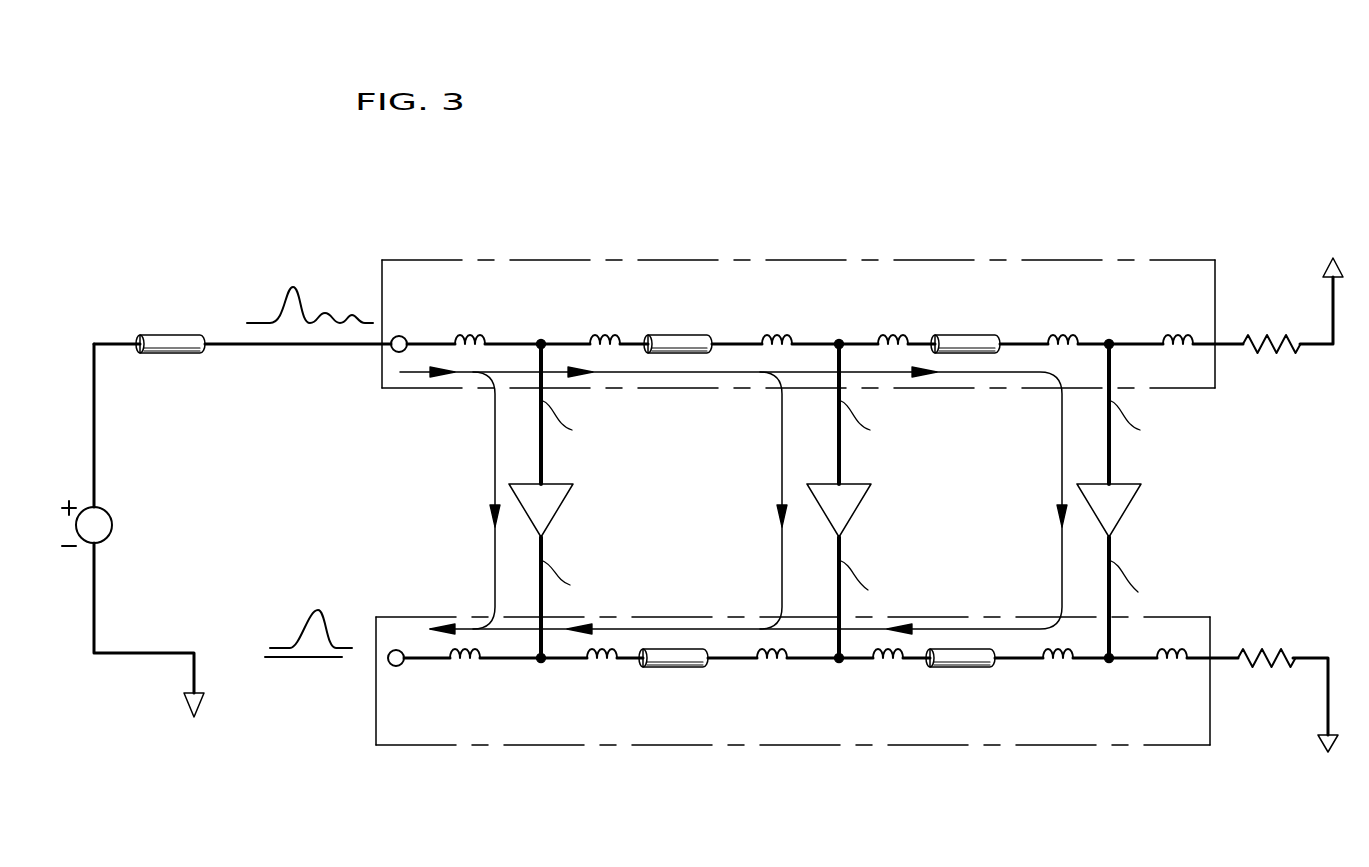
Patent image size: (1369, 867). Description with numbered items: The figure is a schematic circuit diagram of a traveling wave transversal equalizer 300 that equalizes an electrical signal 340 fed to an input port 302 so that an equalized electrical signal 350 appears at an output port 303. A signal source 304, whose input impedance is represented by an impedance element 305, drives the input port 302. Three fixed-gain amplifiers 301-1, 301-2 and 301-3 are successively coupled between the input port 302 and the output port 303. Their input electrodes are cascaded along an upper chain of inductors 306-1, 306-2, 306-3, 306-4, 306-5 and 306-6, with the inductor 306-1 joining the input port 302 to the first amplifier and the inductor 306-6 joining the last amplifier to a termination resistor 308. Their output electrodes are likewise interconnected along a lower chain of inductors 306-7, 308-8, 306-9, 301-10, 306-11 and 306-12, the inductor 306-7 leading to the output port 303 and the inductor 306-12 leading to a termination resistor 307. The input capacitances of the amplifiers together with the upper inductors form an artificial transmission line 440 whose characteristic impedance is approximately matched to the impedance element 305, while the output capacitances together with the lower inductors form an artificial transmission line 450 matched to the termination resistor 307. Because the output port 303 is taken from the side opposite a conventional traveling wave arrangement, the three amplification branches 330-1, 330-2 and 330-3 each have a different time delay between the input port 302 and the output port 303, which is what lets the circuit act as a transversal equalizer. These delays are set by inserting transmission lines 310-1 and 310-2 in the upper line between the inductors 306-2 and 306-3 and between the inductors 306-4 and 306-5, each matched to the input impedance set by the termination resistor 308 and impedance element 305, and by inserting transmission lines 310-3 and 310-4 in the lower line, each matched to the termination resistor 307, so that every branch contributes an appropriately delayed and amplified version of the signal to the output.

The traveling wave transversal equalizer 300 is at (697, 234).
The amplifier 301-1 is at (553, 505).
The amplifier 301-2 is at (851, 505).
The amplifier 301-3 is at (1121, 505).
The inductor 301-10 is at (885, 670).
The input port 302 is at (405, 338).
The output port 303 is at (398, 666).
The signal source 304 is at (110, 518).
The impedance element 305 is at (188, 333).
The inductor 306-1 is at (478, 328).
The inductor 306-2 is at (612, 328).
The inductor 306-3 is at (785, 328).
The inductor 306-4 is at (900, 328).
The inductor 306-5 is at (1070, 328).
The inductor 306-6 is at (1203, 305).
The inductor 306-7 is at (470, 672).
The inductor 308-8 is at (598, 672).
The inductor 306-9 is at (775, 670).
The inductor 306-11 is at (1058, 670).
The inductor 306-12 is at (1172, 670).
The termination resistor 307 is at (1268, 655).
The termination resistor 308 is at (1265, 340).
The transmission line 310-1 is at (690, 333).
The transmission line 310-2 is at (978, 333).
The transmission line 310-3 is at (672, 668).
The transmission line 310-4 is at (945, 668).
The amplification branch 330-1 is at (495, 452).
The amplification branch 330-2 is at (782, 452).
The amplification branch 330-3 is at (1062, 465).
The electrical signal 340 is at (300, 285).
The equalized electrical signal 350 is at (316, 610).
The artificial transmission line 440 is at (552, 260).
The artificial transmission line 450 is at (578, 745).